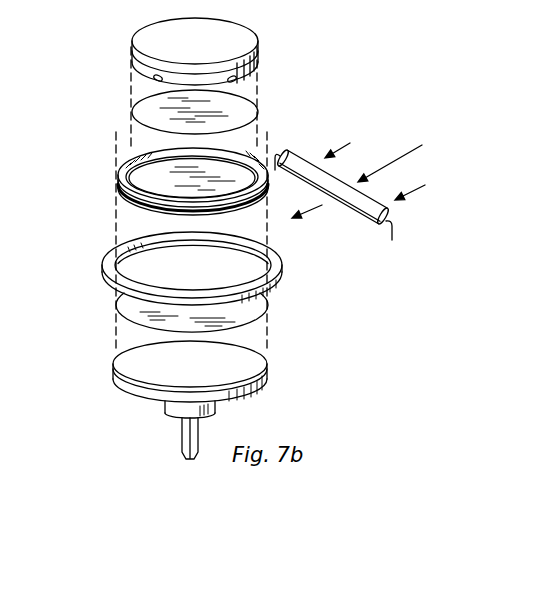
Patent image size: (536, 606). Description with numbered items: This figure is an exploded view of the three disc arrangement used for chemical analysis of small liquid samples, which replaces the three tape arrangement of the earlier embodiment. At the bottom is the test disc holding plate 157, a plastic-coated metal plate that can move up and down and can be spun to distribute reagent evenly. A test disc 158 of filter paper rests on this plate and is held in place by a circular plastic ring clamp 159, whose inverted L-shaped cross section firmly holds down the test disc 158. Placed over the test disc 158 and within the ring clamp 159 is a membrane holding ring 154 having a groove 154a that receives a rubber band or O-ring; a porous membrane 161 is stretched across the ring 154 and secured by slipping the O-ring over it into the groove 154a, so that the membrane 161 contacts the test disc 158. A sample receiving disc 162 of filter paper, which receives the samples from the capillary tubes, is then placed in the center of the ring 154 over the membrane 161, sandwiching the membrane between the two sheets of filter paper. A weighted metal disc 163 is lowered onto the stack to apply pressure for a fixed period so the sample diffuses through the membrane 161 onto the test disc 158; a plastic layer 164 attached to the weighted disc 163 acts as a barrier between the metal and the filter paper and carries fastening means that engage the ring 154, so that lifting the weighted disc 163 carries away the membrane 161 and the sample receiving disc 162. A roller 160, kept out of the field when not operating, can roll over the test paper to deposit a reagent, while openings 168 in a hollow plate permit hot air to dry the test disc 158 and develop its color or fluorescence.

The weighted metal disc 163 is at (257, 38).
The plastic layer 164 is at (138, 73).
The sample receiving disc 162 is at (243, 107).
The porous membrane 161 is at (168, 168).
The membrane holding ring 154 is at (120, 173).
The groove 154a is at (121, 200).
The ring clamp 159 is at (110, 283).
The test disc 158 is at (266, 305).
The test disc holding plate 157 is at (196, 382).
The roller 160 is at (311, 159).
The openings 168 is at (47, 604).